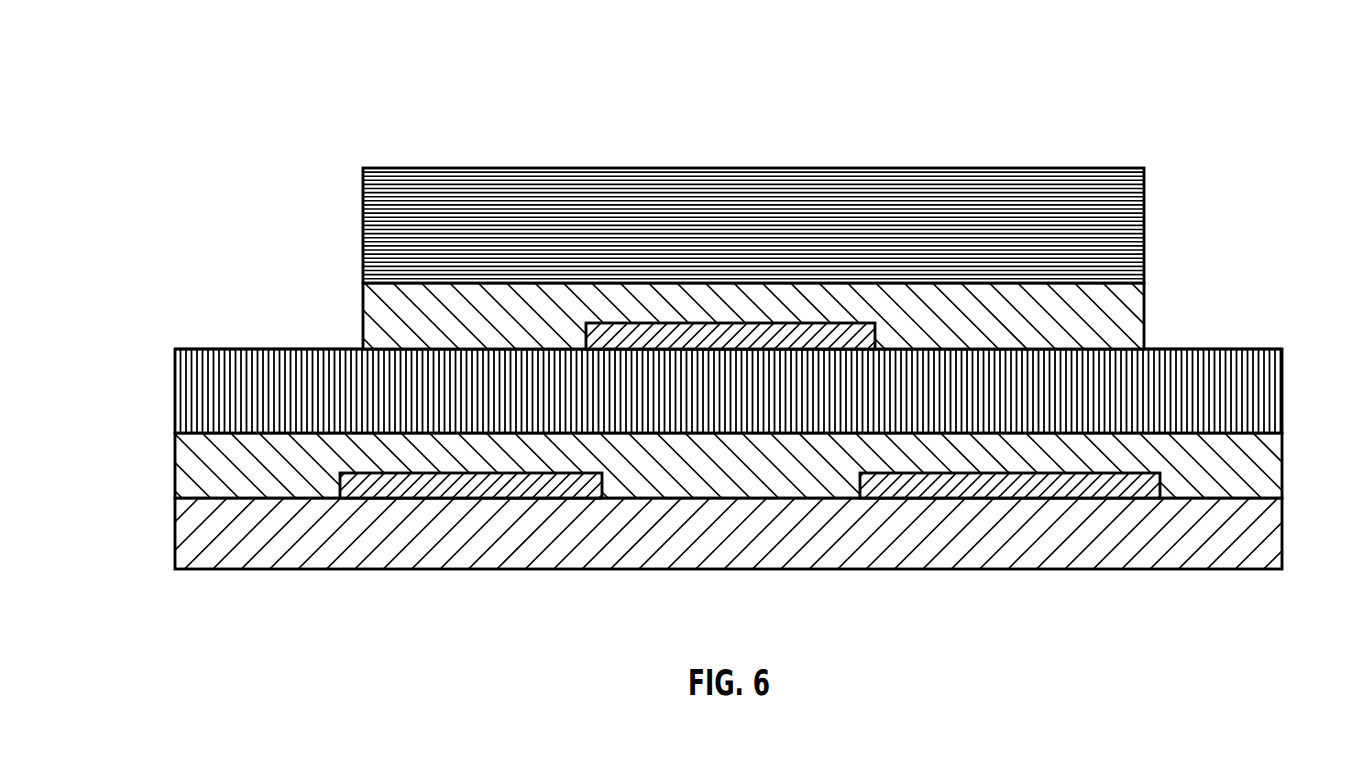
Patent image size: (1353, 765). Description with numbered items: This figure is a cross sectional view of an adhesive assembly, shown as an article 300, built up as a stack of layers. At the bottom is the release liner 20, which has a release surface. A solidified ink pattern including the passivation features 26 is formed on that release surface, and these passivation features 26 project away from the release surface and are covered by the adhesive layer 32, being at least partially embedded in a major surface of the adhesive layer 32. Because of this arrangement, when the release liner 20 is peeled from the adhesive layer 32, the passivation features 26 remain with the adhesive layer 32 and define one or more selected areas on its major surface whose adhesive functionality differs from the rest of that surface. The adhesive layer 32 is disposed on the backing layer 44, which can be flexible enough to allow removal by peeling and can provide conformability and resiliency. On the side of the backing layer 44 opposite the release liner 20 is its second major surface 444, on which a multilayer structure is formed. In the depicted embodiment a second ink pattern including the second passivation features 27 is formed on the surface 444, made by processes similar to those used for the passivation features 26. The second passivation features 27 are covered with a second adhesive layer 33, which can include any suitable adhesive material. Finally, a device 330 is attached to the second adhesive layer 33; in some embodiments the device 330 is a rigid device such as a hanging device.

The article 300 is at (1192, 78).
The device 330 is at (388, 205).
The second adhesive layer 33 is at (388, 300).
The second passivation features 27 is at (722, 335).
The second major surface 444 is at (257, 348).
The backing layer 44 is at (207, 384).
The adhesive layer 32 is at (207, 460).
The passivation features 26 is at (440, 485).
The release liner 20 is at (207, 548).